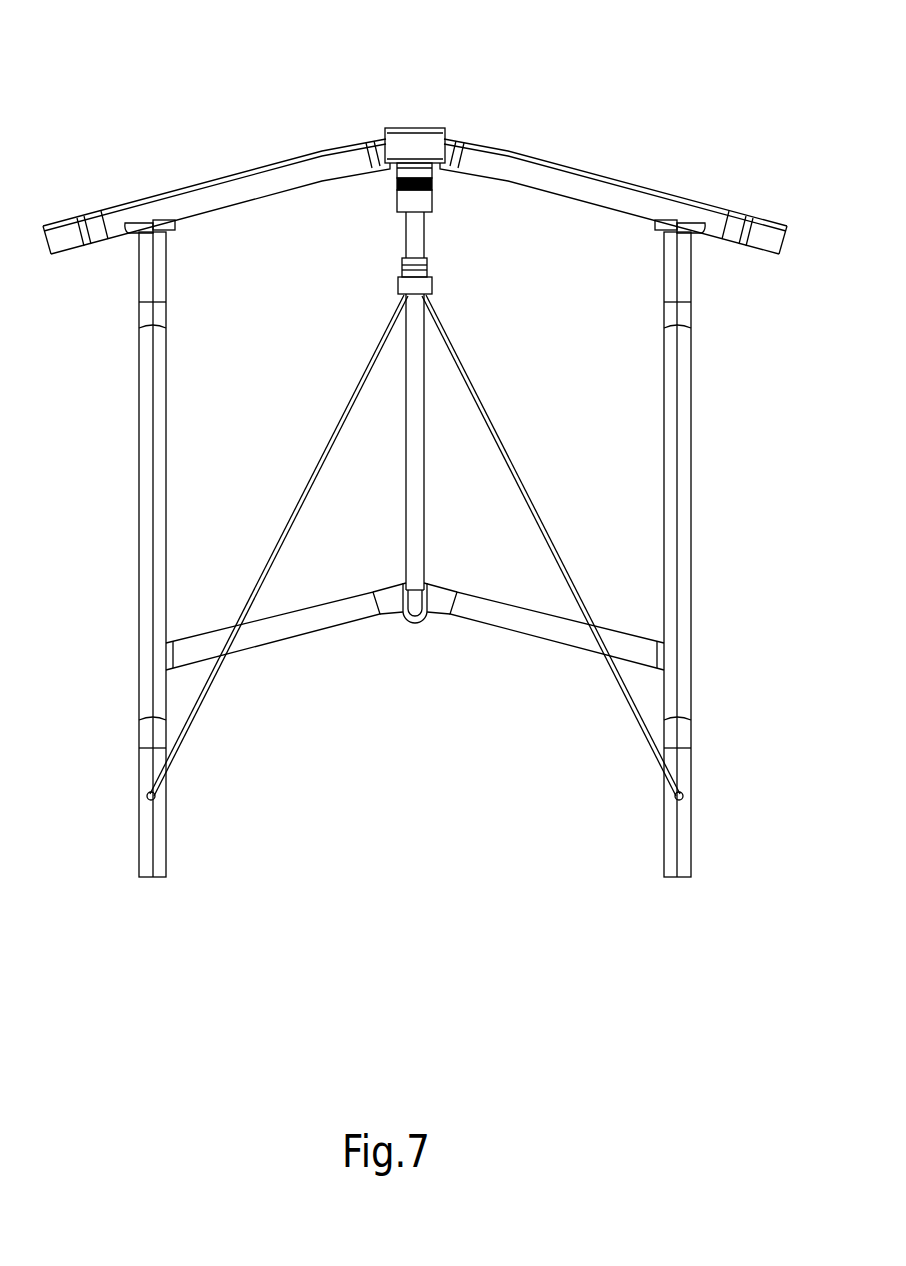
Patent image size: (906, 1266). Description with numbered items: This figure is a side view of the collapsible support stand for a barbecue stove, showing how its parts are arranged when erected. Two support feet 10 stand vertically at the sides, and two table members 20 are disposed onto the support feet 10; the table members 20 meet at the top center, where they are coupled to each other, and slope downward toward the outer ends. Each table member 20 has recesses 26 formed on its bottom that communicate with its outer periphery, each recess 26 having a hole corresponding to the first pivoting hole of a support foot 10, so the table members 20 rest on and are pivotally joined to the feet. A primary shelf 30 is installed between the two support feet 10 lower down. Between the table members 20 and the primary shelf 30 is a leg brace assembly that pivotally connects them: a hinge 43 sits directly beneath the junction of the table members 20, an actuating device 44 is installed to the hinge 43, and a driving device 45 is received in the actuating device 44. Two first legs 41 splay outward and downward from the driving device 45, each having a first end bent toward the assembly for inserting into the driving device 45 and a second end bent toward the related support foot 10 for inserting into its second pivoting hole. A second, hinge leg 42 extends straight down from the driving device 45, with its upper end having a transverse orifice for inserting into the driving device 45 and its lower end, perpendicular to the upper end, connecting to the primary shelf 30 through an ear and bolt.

The support foot 10 is at (148, 498).
The table member 20 is at (237, 185).
The recess 26 is at (143, 237).
The primary shelf 30 is at (287, 628).
The first leg 41 is at (322, 451).
The second, hinge leg 42 is at (410, 488).
The hinge 43 is at (415, 88).
The actuating device 44 is at (365, 198).
The driving device 45 is at (352, 284).